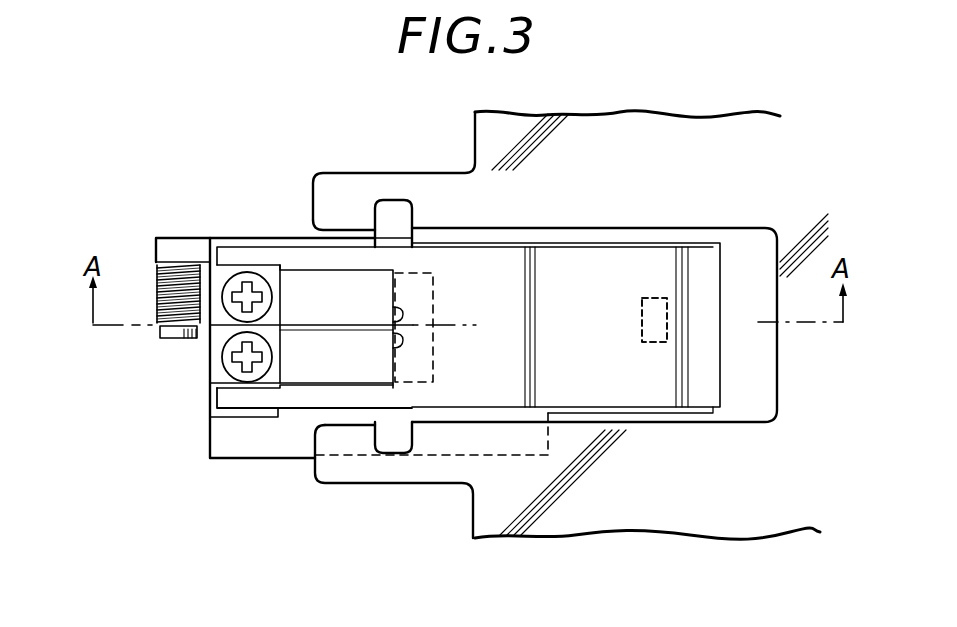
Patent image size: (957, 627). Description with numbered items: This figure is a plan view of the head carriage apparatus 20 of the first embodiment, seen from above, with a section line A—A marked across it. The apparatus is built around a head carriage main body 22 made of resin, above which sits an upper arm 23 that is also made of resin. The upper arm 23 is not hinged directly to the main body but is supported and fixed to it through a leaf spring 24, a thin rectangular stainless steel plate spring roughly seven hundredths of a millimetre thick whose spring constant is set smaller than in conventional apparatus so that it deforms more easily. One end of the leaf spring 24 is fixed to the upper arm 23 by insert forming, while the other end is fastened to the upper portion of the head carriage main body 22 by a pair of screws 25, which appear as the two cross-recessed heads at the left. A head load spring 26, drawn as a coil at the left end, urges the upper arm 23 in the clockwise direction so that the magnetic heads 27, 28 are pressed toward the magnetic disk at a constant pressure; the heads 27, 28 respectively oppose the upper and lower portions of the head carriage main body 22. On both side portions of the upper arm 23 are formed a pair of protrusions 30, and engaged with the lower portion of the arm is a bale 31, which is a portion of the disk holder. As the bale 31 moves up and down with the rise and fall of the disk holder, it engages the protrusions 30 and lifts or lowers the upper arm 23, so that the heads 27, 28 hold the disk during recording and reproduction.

The head carriage apparatus 20 is at (324, 97).
The head carriage main body 22 is at (273, 427).
The upper arm 23 is at (598, 274).
The leaf spring 24 is at (353, 352).
The screws 25 is at (227, 307).
The head load spring 26 is at (155, 282).
The magnetic head 27 is at (656, 294).
The magnetic head 28 is at (654, 320).
The protrusions 30 is at (405, 222).
The bale 31 is at (343, 186).